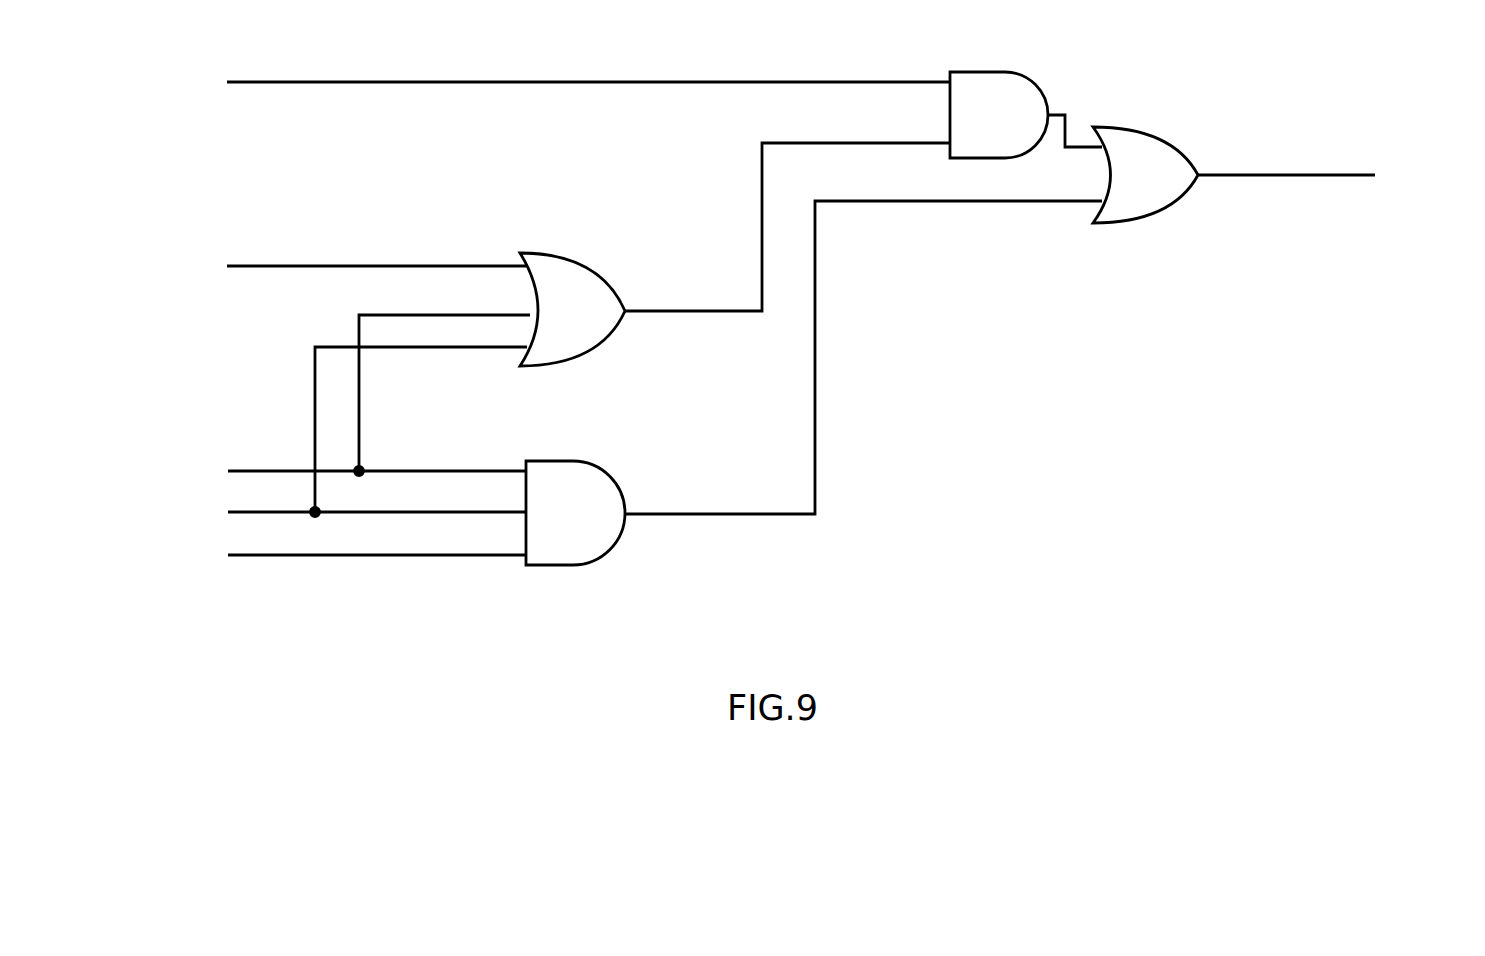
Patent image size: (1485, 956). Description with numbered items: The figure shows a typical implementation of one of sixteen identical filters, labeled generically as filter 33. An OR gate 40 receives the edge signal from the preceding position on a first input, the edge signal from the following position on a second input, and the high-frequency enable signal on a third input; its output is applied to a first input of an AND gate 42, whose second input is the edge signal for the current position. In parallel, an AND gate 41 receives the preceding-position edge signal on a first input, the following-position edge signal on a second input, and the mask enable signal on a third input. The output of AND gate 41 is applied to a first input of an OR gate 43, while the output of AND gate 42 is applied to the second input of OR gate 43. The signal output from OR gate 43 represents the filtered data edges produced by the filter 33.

The filter 33 is at (794, 320).
The OR gate 40 is at (603, 340).
The AND gate 41 is at (603, 555).
The AND gate 42 is at (1032, 77).
The OR gate 43 is at (1183, 197).